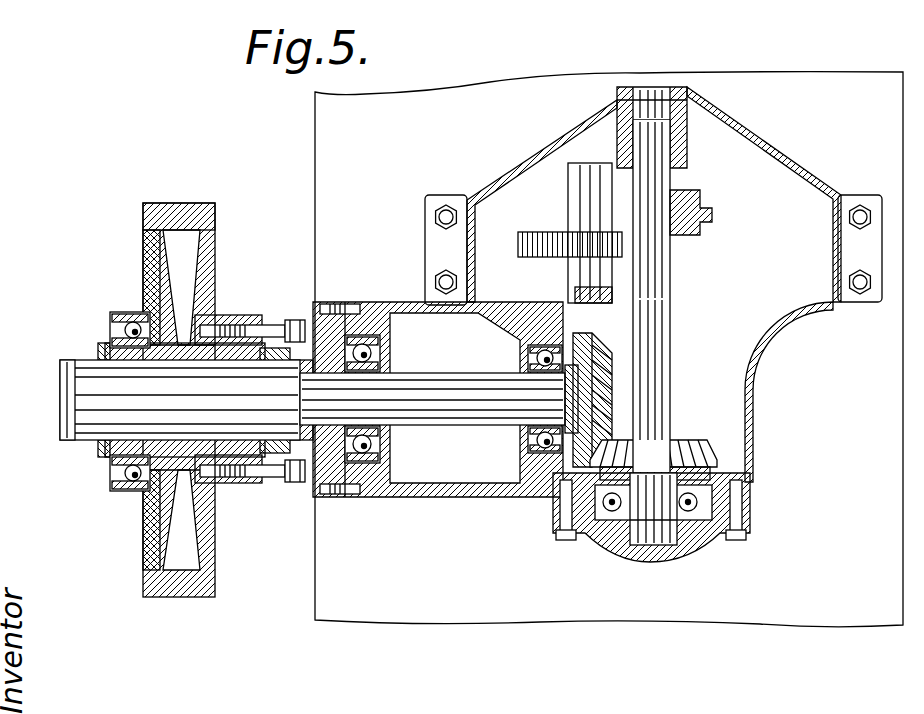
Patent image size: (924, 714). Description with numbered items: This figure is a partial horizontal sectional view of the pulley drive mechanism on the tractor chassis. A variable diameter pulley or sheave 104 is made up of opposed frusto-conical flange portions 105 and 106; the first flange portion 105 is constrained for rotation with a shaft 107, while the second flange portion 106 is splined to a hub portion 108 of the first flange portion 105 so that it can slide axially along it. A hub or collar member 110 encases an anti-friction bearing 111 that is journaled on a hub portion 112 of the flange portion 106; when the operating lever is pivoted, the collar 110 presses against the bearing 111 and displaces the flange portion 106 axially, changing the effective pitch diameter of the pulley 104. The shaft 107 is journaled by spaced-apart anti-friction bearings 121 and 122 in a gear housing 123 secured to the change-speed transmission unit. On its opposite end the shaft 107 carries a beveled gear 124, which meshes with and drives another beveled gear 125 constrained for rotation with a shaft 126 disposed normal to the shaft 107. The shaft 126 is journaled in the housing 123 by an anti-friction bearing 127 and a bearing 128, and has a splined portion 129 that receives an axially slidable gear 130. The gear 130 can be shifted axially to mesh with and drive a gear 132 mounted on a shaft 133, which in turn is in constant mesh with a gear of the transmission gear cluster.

The variable diameter pulley 104 is at (177, 373).
The first flange portion 105 is at (217, 207).
The second flange portion 106 is at (143, 207).
The shaft 107 is at (92, 378).
The hub portion 108 is at (95, 345).
The collar member 110 is at (112, 465).
The anti-friction bearing 111 is at (133, 318).
The hub portion 112 is at (104, 345).
The anti-friction bearing 121 is at (378, 357).
The anti-friction bearing 122 is at (530, 353).
The gear housing 123 is at (503, 499).
The beveled gear 124 is at (586, 338).
The beveled gear 125 is at (700, 440).
The shaft 126 is at (668, 362).
The anti-friction bearing 127 is at (712, 530).
The bearing 128 is at (685, 152).
The splined portion 129 is at (680, 268).
The axially slidable gear 130 is at (714, 214).
The gear 132 is at (546, 234).
The shaft 133 is at (566, 272).